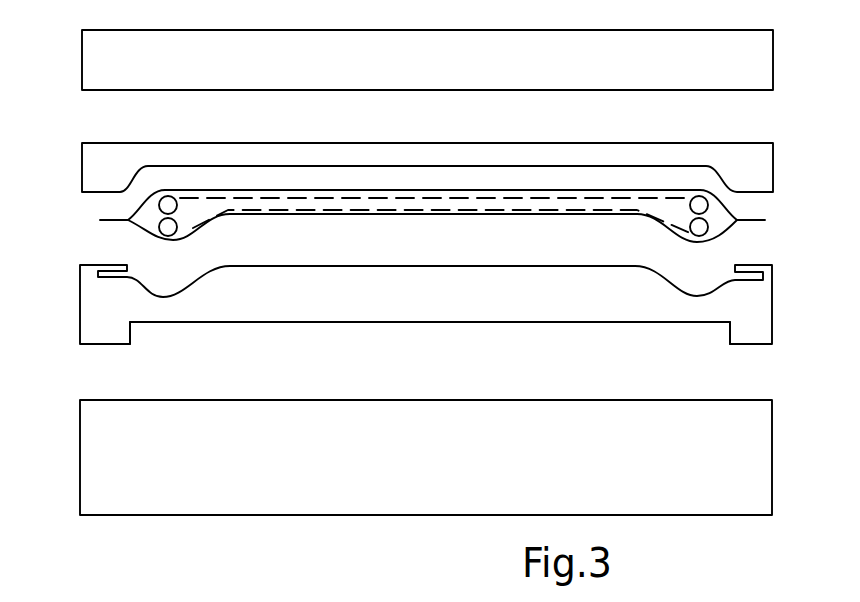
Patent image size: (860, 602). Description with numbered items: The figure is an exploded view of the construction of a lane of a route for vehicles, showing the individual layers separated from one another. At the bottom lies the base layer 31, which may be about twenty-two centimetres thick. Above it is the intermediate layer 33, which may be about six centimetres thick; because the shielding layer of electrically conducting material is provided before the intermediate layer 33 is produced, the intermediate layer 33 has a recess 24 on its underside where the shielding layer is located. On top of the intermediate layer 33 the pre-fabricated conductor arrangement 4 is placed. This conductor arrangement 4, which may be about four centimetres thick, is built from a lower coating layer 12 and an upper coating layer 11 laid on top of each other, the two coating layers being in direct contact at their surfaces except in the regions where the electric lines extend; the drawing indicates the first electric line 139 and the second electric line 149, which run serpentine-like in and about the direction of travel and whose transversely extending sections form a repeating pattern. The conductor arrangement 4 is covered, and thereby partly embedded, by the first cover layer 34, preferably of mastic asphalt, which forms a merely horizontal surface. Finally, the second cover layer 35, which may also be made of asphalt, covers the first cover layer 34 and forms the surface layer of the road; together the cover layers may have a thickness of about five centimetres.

The second cover layer 35 is at (760, 68).
The first cover layer 34 is at (760, 172).
The intermediate layer 33 is at (760, 317).
The base layer 31 is at (760, 471).
The upper coating layer 11 is at (478, 190).
The lower coating layer 12 is at (448, 217).
The pre-fabricated conductor arrangement 4 is at (391, 188).
The recess 24 is at (397, 332).
The second electric line 149 is at (168, 204).
The first electric line 139 is at (168, 228).